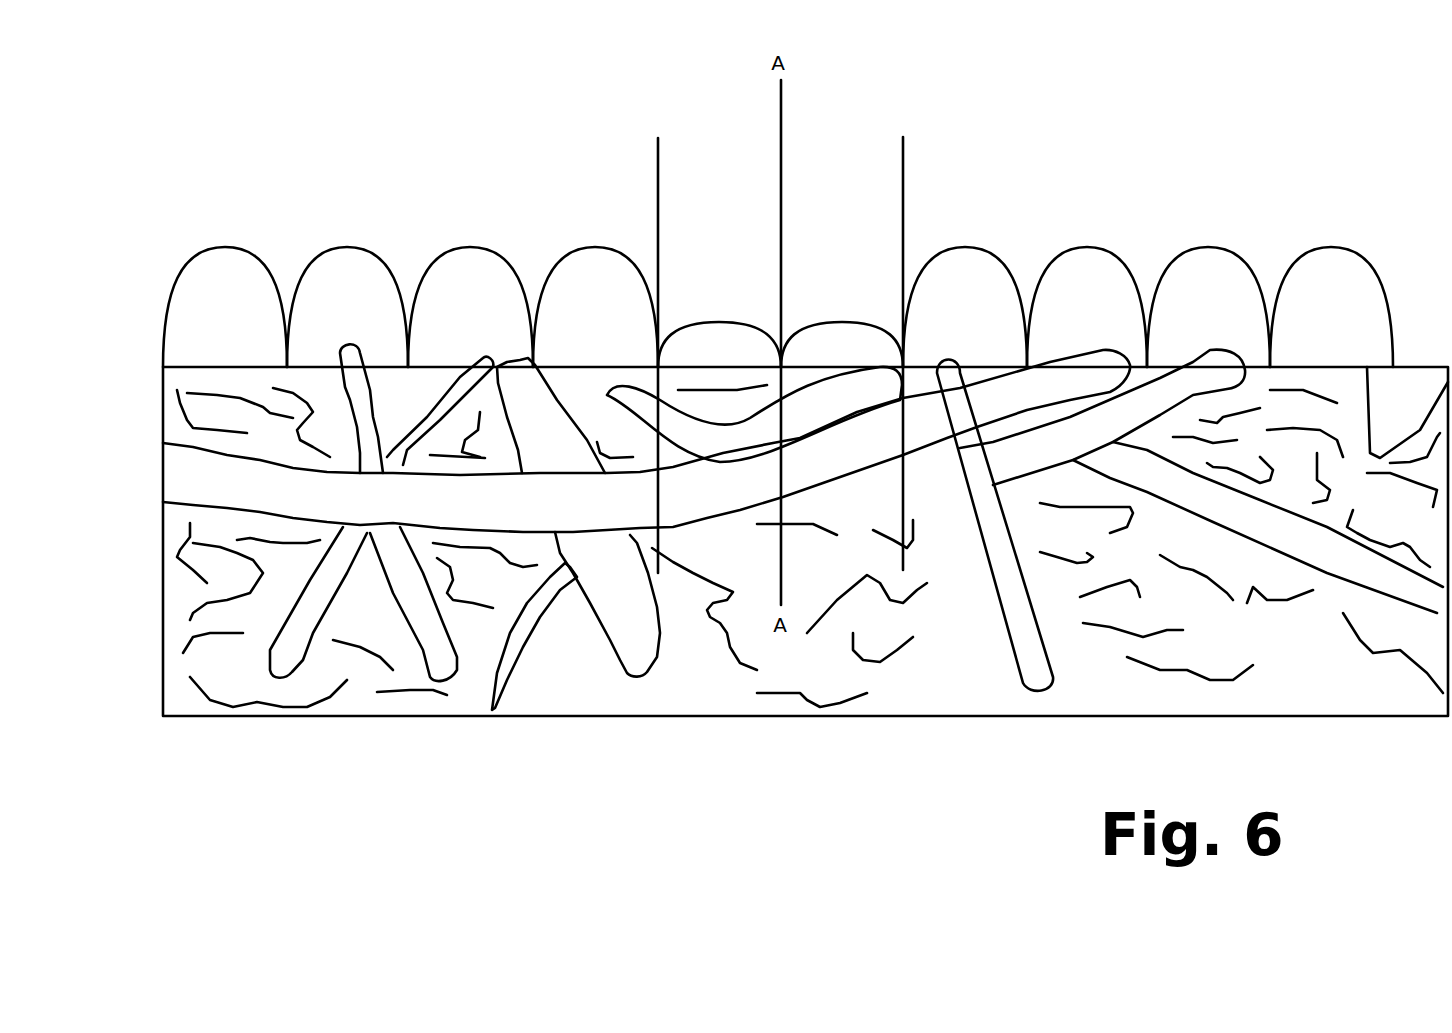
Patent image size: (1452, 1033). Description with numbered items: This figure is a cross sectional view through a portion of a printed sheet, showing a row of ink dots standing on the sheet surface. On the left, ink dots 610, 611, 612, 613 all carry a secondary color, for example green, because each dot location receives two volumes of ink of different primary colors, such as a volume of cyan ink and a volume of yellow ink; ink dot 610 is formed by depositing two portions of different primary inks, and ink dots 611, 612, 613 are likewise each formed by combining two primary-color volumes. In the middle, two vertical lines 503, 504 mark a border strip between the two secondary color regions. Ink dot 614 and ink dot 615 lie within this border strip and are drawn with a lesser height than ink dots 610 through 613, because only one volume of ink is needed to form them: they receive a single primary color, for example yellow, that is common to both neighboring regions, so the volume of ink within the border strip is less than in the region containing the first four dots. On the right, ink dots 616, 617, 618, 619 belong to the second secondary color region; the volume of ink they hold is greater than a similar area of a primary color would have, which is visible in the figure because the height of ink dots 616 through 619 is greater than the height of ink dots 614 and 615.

The line 503 is at (658, 138).
The line 504 is at (903, 137).
The ink dot 610 is at (222, 265).
The ink dot 611 is at (343, 262).
The ink dot 612 is at (473, 262).
The ink dot 613 is at (592, 263).
The ink dot 614 is at (707, 330).
The ink dot 615 is at (827, 330).
The ink dot 616 is at (962, 263).
The ink dot 617 is at (1082, 263).
The ink dot 618 is at (1197, 263).
The ink dot 619 is at (1320, 263).